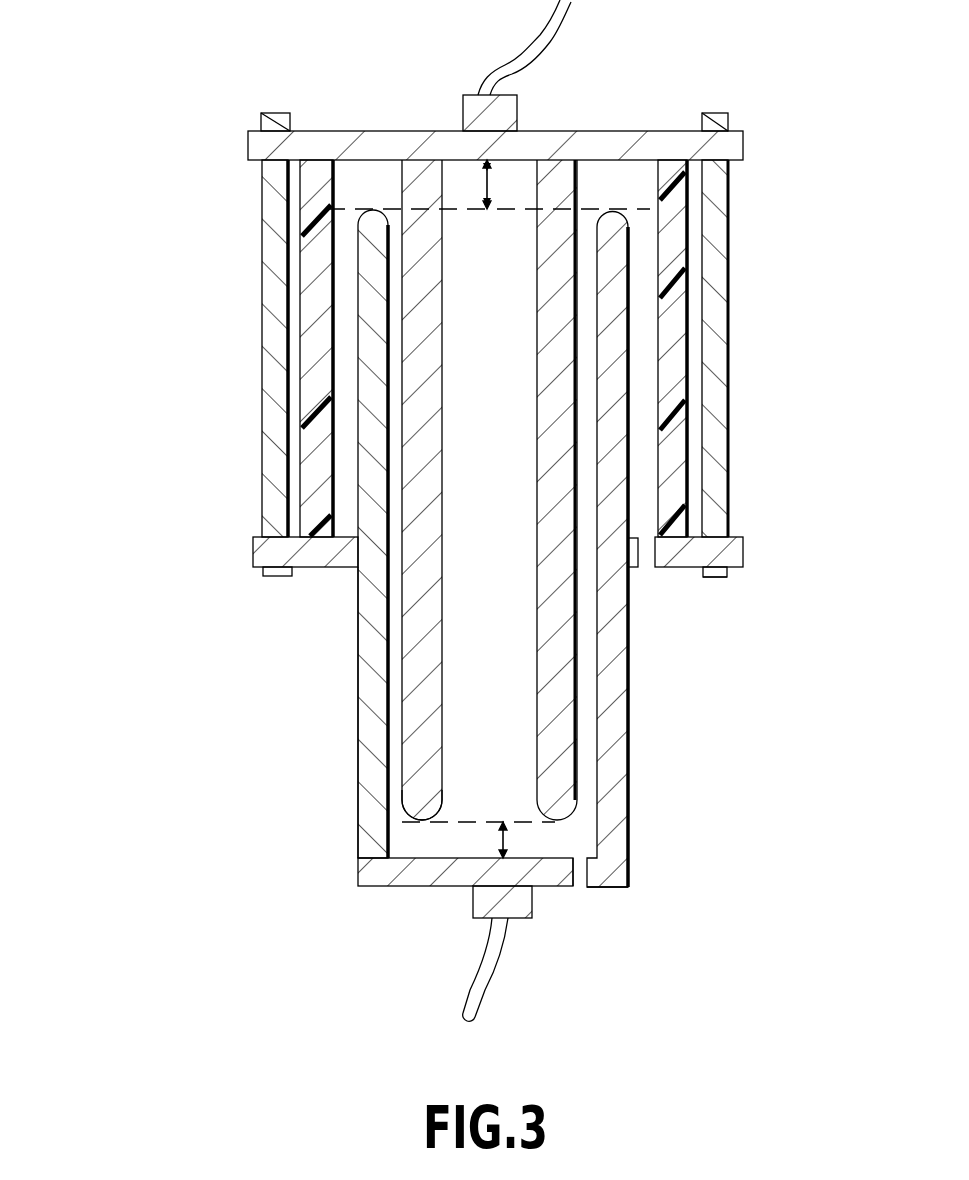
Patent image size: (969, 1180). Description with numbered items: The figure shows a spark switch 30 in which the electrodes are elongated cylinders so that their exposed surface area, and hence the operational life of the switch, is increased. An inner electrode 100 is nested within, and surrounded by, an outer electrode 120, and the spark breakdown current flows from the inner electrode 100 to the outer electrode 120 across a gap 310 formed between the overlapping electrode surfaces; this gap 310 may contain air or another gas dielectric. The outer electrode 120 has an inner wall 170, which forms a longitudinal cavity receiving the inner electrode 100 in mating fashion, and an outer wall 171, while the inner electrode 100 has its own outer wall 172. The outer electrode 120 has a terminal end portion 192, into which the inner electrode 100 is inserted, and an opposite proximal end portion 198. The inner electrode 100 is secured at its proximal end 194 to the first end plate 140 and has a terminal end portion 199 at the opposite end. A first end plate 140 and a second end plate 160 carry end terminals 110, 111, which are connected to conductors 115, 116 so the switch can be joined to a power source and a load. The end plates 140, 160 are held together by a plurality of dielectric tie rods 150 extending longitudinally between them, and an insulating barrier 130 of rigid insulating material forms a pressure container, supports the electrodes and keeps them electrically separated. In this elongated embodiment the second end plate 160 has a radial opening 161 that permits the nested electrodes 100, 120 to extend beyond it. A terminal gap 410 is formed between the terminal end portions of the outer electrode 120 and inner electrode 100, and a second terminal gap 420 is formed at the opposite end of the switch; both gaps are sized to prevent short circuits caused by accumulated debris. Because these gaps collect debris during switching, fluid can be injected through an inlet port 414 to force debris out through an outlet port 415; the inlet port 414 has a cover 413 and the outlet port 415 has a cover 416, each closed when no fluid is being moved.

The spark switch 30 is at (126, 79).
The inner electrode 100 is at (560, 718).
The end terminal 110 is at (518, 112).
The end terminal 111 is at (535, 892).
The conductor 115 is at (558, 40).
The conductor 116 is at (488, 983).
The outer electrode 120 is at (613, 422).
The insulating barrier 130 is at (728, 290).
The first end plate 140 is at (743, 146).
The tie rods 150 is at (729, 240).
The second end plate 160 is at (743, 543).
The radial opening 161 is at (355, 573).
The inner wall 170 is at (387, 723).
The outer wall 171 is at (357, 590).
The outer wall 172 is at (400, 776).
The terminal end portion 192 is at (381, 199).
The proximal end 194 is at (587, 173).
The proximal end portion 198 is at (602, 842).
The terminal end portion 199 is at (357, 860).
The gap 310 is at (585, 663).
The terminal gap 410 is at (542, 835).
The cover 413 is at (648, 565).
The inlet port 414 is at (653, 570).
The outlet port 415 is at (585, 878).
The cover 416 is at (573, 890).
The second terminal gap 420 is at (466, 183).